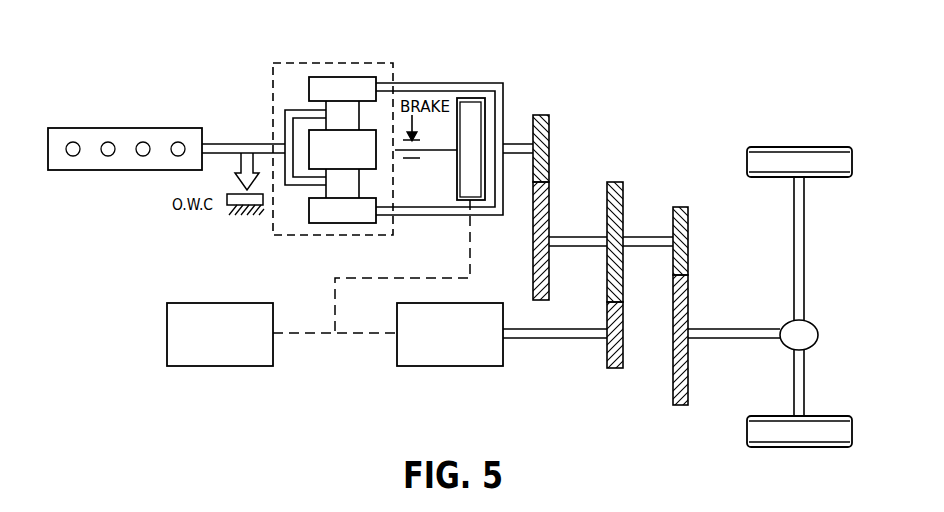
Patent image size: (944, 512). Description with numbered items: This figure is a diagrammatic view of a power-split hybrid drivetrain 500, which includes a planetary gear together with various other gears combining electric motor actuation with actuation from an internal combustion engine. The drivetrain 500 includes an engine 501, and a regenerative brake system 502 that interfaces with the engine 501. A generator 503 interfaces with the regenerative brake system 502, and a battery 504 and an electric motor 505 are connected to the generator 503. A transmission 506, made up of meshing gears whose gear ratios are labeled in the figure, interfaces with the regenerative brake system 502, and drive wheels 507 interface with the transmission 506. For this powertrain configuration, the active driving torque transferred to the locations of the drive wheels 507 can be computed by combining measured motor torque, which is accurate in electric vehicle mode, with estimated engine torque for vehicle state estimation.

The power-split hybrid drivetrain 500 is at (157, 56).
The engine 501 is at (124, 170).
The regenerative brake system 502 is at (393, 77).
The generator 503 is at (486, 115).
The battery 504 is at (220, 366).
The electric motor 505 is at (450, 366).
The transmission 506 is at (673, 386).
The drive wheels 507 is at (797, 147).